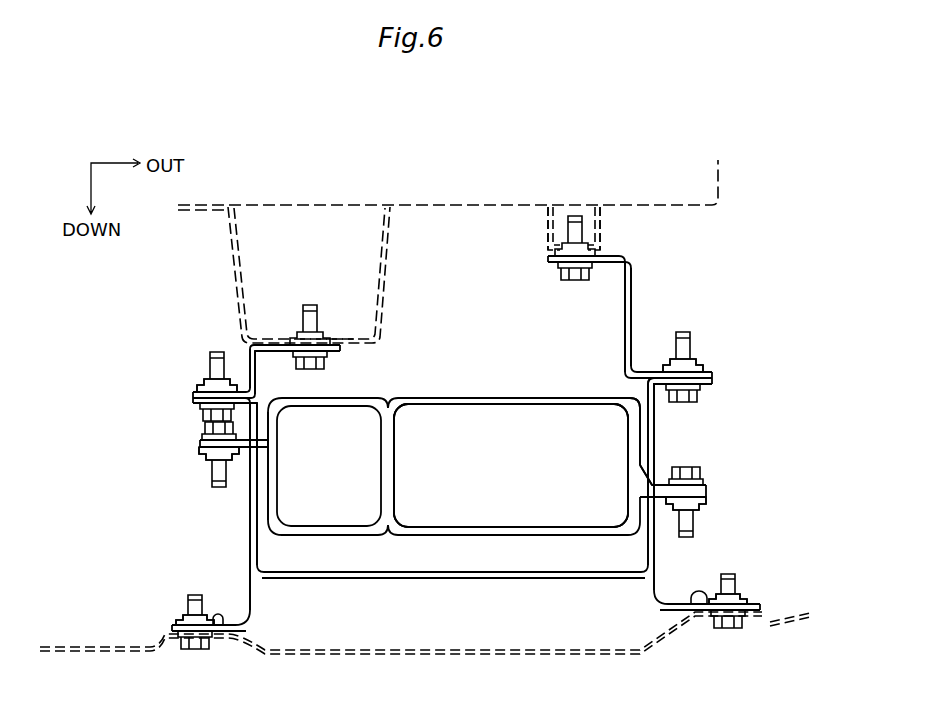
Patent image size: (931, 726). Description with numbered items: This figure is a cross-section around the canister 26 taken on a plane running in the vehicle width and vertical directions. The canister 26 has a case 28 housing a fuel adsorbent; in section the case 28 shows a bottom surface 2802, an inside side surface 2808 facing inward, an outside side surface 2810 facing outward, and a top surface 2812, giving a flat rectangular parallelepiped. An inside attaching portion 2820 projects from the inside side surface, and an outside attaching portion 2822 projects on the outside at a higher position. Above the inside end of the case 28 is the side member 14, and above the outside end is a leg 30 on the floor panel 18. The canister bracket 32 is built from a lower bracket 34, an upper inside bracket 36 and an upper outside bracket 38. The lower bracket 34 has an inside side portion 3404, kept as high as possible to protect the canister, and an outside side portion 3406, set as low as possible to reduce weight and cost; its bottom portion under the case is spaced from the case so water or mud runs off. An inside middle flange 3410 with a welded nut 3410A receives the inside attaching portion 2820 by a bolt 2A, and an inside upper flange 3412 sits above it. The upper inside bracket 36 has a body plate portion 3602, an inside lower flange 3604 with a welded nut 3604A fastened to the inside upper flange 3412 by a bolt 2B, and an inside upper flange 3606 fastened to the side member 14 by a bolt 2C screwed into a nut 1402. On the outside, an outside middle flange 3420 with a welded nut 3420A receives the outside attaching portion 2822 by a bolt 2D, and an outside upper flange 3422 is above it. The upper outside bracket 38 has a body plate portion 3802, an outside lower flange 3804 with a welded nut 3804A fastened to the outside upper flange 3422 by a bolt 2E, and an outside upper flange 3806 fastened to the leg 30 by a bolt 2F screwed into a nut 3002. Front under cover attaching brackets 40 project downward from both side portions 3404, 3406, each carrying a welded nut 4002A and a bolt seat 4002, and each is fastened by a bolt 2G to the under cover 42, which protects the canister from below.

The side member 14 is at (360, 351).
The nut 1402 is at (320, 332).
The floor panel 18 is at (445, 213).
The canister 26 is at (516, 399).
The case 28 is at (511, 465).
The bottom surface 2802 is at (535, 577).
The inside side surface 2808 is at (268, 495).
The outside side surface 2810 is at (641, 440).
The top surface 2812 is at (577, 402).
The inside attaching portion 2820 is at (258, 430).
The outside attaching portion 2822 is at (660, 489).
The leg 30 is at (600, 232).
The nut 3002 is at (578, 235).
The canister bracket 32 is at (450, 591).
The lower bracket 34 is at (333, 579).
The inside side portion 3404 is at (250, 510).
The outside side portion 3406 is at (660, 411).
The inside middle flange 3410 is at (201, 459).
The nut 3410A is at (207, 472).
The inside upper flange 3412 is at (190, 401).
The outside middle flange 3420 is at (706, 500).
The nut 3420A is at (693, 520).
The outside upper flange 3422 is at (708, 382).
The upper inside bracket 36 is at (246, 357).
The body plate portion 3602 is at (252, 371).
The inside lower flange 3604 is at (196, 393).
The nut 3604A is at (200, 376).
The inside upper flange 3606 is at (264, 347).
The upper outside bracket 38 is at (630, 297).
The body plate portion 3802 is at (628, 317).
The outside lower flange 3804 is at (702, 371).
The nut 3804A is at (665, 362).
The outside upper flange 3806 is at (548, 258).
The front under cover attaching bracket 40 is at (262, 627).
The mounting plate pin 4002 is at (219, 627).
The nut 4002A is at (178, 618).
The under cover 42 is at (521, 652).
The bolt 2A is at (206, 433).
The bolt 2B is at (196, 410).
The bolt 2C is at (326, 358).
The bolt 2D is at (700, 472).
The bolt 2E is at (700, 391).
The bolt 2F is at (556, 274).
The bolt 2G is at (186, 649).